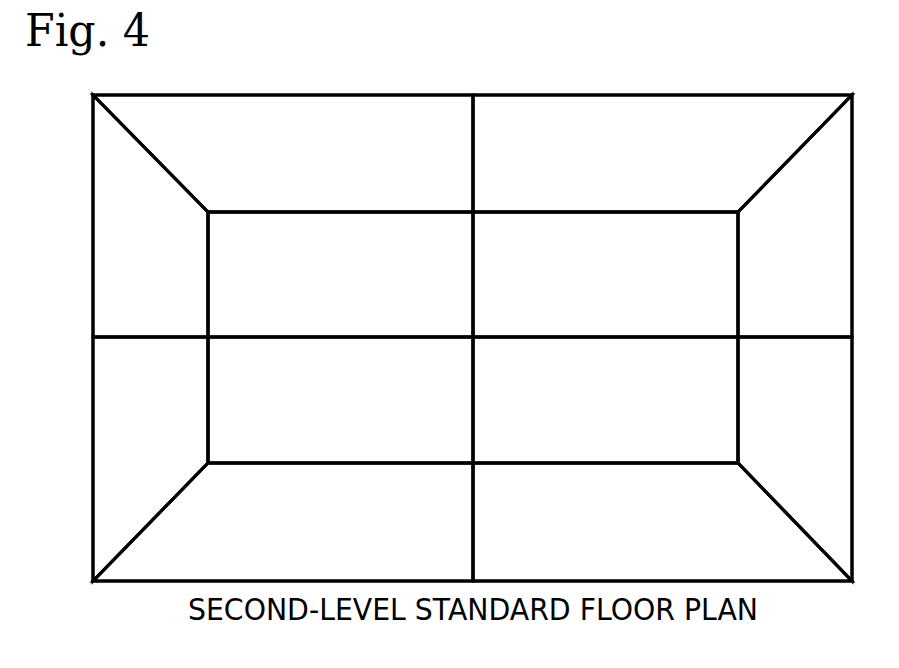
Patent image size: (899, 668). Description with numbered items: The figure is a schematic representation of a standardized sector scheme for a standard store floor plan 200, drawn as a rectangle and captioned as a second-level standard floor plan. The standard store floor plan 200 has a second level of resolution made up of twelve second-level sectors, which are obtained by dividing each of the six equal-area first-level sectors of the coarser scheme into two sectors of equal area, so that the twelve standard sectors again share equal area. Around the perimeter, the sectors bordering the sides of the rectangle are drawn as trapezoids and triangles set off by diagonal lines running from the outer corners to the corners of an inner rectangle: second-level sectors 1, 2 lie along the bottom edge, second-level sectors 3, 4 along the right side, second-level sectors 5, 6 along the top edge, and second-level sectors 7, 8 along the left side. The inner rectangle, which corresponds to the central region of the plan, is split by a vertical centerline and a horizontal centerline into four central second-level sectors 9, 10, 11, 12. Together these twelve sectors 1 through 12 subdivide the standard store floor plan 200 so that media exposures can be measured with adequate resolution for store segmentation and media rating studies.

The standard store floor plan 200 is at (771, 63).
The second-level sector 1 is at (283, 522).
The second-level sector 2 is at (662, 522).
The second-level sector 3 is at (795, 459).
The second-level sector 4 is at (795, 216).
The second-level sector 5 is at (662, 153).
The second-level sector 6 is at (283, 153).
The second-level sector 7 is at (150, 216).
The second-level sector 8 is at (150, 459).
The second-level sector 9 is at (340, 400).
The second-level sector 10 is at (605, 400).
The second-level sector 11 is at (605, 274).
The second-level sector 12 is at (340, 274).